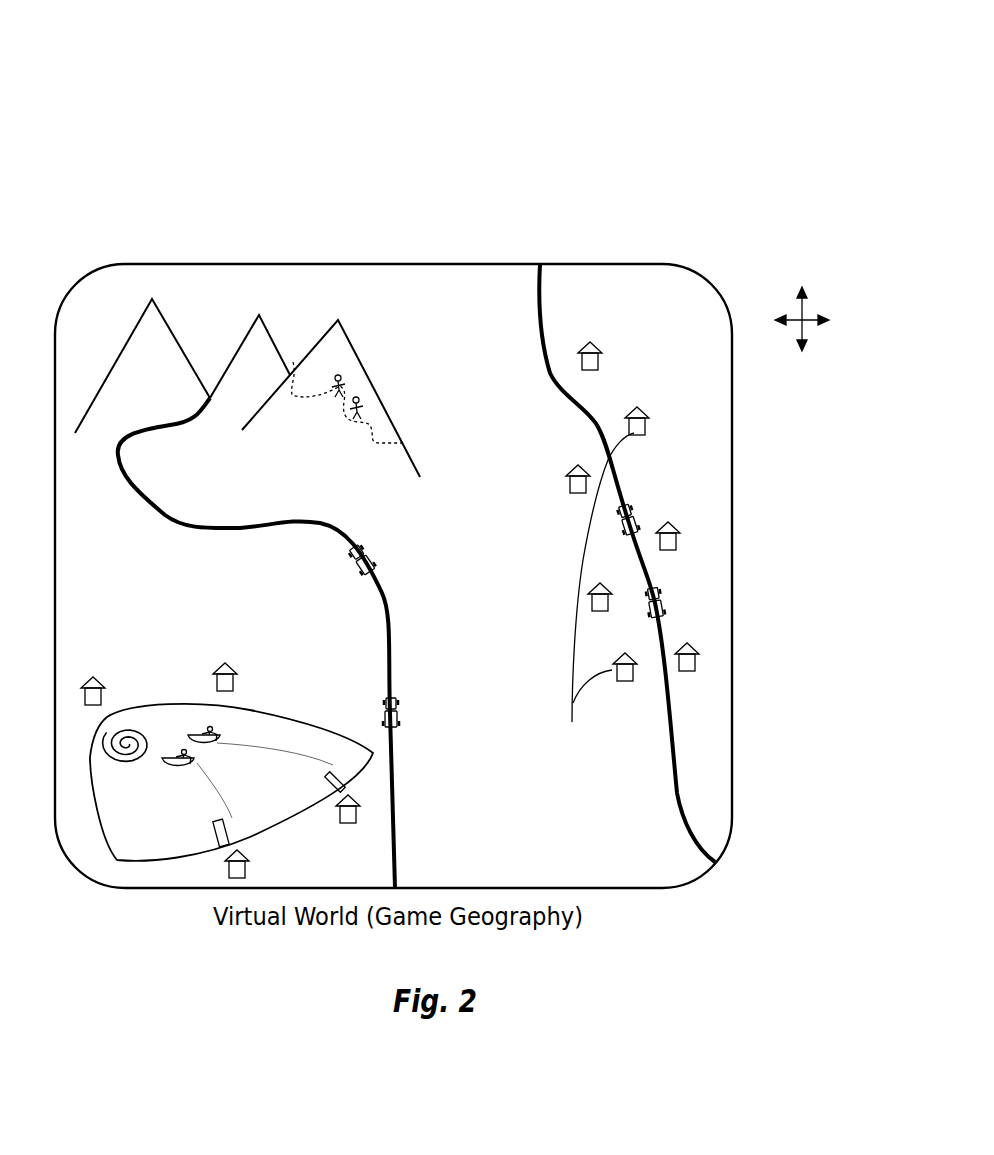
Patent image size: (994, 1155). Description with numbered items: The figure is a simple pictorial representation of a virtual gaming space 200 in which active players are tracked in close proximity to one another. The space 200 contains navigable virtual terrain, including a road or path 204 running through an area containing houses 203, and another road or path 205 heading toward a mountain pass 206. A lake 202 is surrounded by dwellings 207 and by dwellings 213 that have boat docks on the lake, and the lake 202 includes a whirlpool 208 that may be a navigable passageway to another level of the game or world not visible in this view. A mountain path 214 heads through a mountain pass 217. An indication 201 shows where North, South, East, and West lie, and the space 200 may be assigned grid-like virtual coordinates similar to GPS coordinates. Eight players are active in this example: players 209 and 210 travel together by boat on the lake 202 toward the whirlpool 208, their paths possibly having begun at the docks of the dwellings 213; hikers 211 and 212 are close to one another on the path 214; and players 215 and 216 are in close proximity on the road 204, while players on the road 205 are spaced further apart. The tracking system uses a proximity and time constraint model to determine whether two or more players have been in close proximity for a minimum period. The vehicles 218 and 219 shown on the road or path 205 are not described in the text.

The virtual gaming space 200 is at (601, 139).
The indication of North, South, East, and West 201 is at (807, 257).
The lake 202 is at (257, 710).
The houses 203 is at (591, 595).
The road or path 204 is at (677, 793).
The road or path 205 is at (225, 530).
The mountain pass 206 is at (213, 384).
The dwellings 207 is at (101, 674).
The whirlpool 208 is at (122, 730).
The player 209 is at (183, 770).
The player 210 is at (203, 748).
The player 211 is at (345, 383).
The player 212 is at (362, 410).
The dwellings 213 is at (246, 870).
The mountain path 214 is at (380, 438).
The player 215 is at (641, 525).
The player 216 is at (663, 607).
The mountain pass 217 is at (285, 359).
The vehicle 218 is at (373, 560).
The vehicle 219 is at (400, 718).